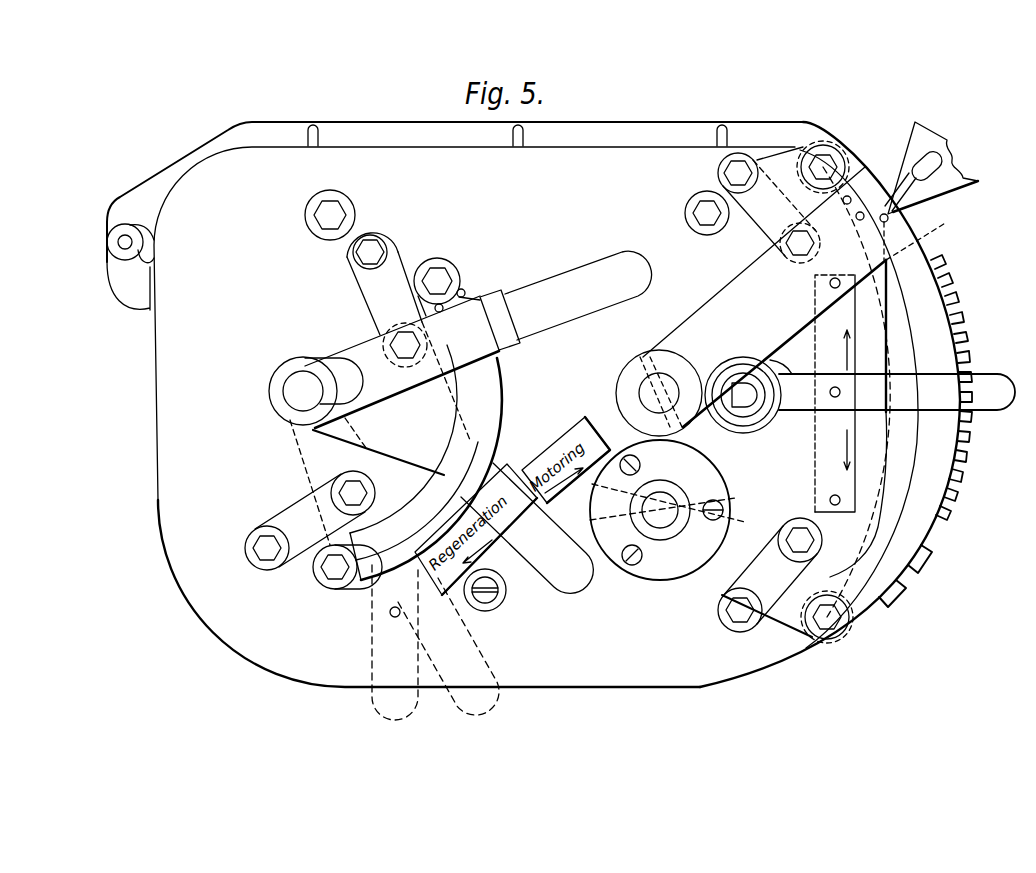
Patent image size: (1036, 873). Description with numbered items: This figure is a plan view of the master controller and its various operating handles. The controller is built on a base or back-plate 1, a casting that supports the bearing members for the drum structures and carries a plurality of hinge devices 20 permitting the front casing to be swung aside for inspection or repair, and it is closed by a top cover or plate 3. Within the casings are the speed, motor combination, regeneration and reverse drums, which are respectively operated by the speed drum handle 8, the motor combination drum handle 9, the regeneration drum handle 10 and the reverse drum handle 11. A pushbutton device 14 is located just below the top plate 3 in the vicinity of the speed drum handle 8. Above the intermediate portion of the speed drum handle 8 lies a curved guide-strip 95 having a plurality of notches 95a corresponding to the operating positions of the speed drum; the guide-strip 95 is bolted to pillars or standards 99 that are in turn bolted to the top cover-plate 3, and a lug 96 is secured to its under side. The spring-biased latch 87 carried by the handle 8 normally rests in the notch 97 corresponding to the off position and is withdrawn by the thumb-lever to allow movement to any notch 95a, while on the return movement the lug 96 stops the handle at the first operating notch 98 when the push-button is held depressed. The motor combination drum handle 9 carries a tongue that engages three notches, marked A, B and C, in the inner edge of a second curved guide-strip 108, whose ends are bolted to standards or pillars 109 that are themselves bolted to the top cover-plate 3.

The base or back-plate 1 is at (344, 133).
The top cover or plate 3 is at (172, 442).
The speed drum handle 8 is at (899, 150).
The motor combination drum handle 9 is at (572, 276).
The regeneration drum handle 10 is at (549, 594).
The reverse drum handle 11 is at (995, 383).
The pushbutton device 14 is at (727, 500).
The hinge devices 20 is at (112, 268).
The slidable member or latch 87 is at (937, 203).
The curved guide-strip 95 is at (916, 360).
The notches 95a is at (956, 302).
The lug 96 is at (870, 240).
The notch 97 is at (887, 213).
The notch 98 is at (938, 263).
The pillars or standards 99 is at (792, 180).
The curved guide-strip 108 is at (424, 481).
The standards or pillars 109 is at (370, 303).